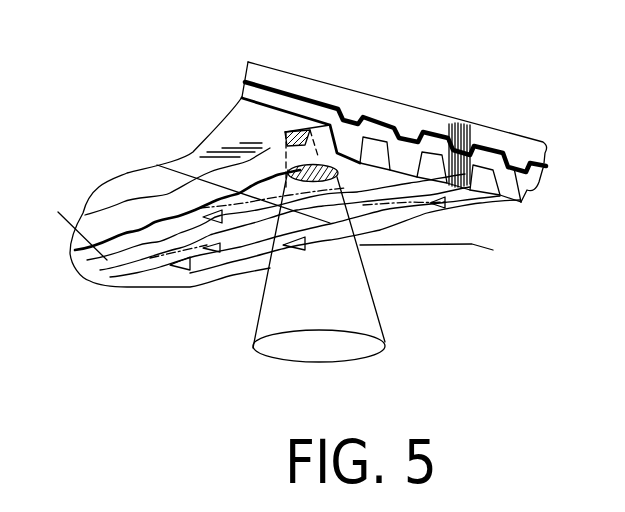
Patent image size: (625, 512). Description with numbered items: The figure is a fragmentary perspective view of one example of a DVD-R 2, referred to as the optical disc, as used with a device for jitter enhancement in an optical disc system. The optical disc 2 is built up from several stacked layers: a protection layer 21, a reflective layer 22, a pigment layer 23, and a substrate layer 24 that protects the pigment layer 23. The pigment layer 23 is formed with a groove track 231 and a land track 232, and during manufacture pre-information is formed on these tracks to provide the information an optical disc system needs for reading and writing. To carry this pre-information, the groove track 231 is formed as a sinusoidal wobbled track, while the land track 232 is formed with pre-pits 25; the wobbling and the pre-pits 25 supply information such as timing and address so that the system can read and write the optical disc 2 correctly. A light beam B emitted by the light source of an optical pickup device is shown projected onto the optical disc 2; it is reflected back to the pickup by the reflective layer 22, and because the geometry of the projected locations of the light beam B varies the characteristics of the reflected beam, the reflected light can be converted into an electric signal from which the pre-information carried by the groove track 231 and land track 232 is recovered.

The DVD-R 2 is at (144, 136).
The protection layer 21 is at (512, 147).
The reflective layer 22 is at (296, 94).
The pigment layer 23 is at (226, 122).
The groove track 231 is at (128, 284).
The land track 232 is at (428, 153).
The substrate layer 24 is at (472, 242).
The pre-pits 25 is at (137, 205).
The light beam B is at (255, 328).